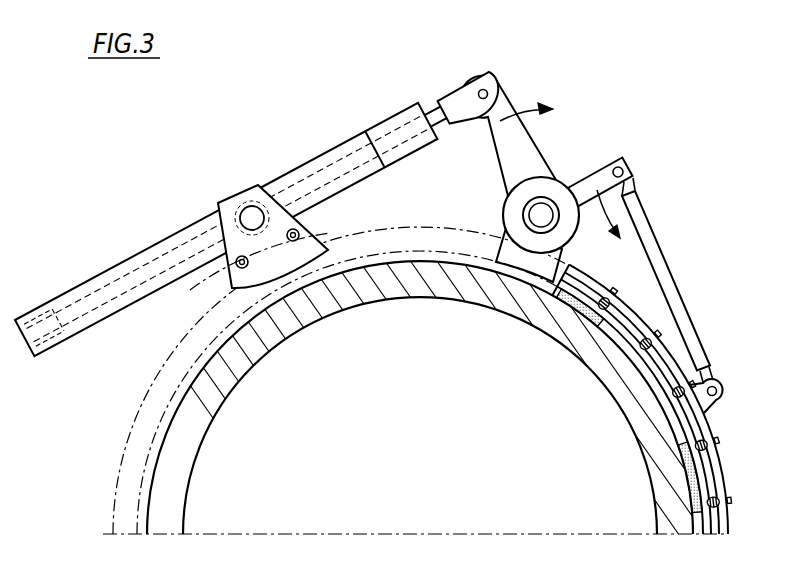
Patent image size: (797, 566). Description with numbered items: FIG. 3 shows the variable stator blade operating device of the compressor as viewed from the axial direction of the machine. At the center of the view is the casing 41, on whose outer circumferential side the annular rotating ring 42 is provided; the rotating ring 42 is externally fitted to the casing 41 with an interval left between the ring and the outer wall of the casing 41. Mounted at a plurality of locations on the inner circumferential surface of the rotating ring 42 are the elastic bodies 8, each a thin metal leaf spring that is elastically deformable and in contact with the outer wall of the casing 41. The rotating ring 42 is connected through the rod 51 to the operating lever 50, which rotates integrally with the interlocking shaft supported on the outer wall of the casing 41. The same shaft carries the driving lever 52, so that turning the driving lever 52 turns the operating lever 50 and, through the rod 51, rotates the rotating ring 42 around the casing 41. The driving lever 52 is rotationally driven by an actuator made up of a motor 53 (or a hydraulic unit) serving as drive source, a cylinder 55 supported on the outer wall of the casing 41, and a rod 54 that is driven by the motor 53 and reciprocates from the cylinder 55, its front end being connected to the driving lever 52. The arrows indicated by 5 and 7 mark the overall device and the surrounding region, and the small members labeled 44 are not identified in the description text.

The brake device 5 is at (620, 91).
The wheel 7 is at (718, 109).
The elastic body 8 is at (702, 483).
The casing 41 is at (167, 433).
The rotating ring 42 is at (712, 428).
The roller 44 is at (717, 513).
The operating lever 50 is at (630, 160).
The rod 51 is at (660, 235).
The driving lever 52 is at (472, 74).
The motor 53 is at (110, 268).
The rod 54 is at (428, 100).
The cylinder 55 is at (308, 163).